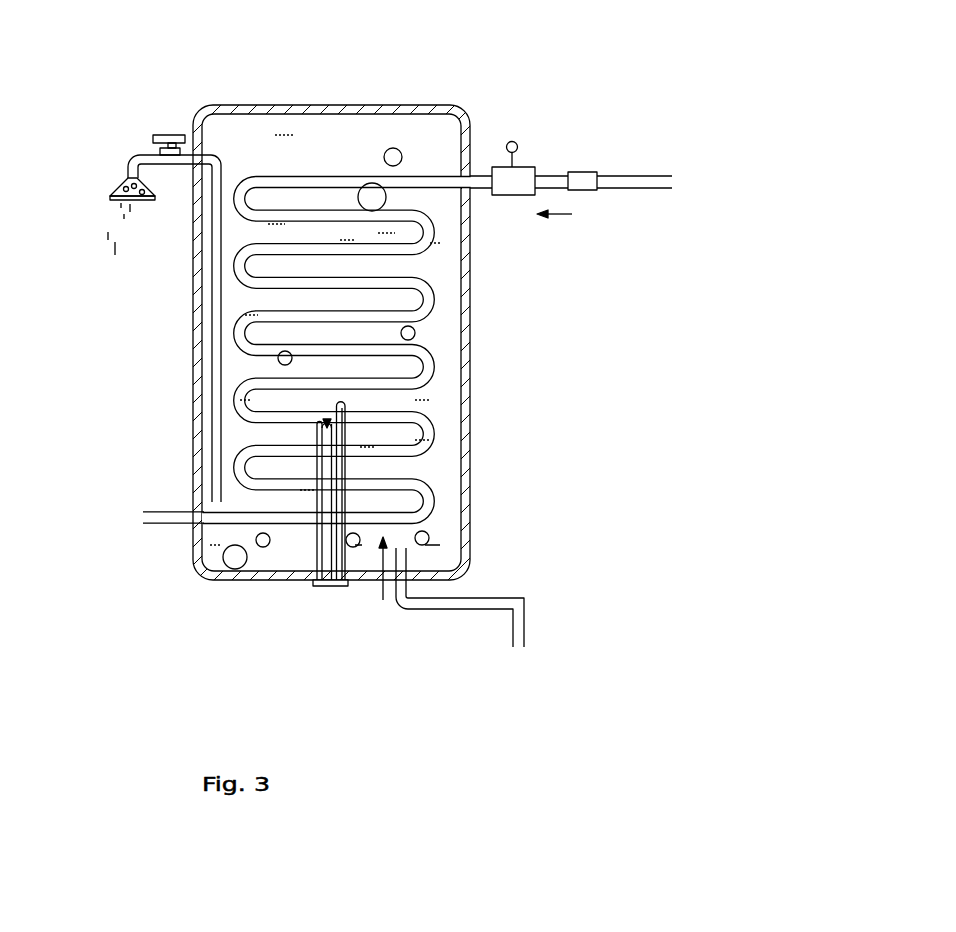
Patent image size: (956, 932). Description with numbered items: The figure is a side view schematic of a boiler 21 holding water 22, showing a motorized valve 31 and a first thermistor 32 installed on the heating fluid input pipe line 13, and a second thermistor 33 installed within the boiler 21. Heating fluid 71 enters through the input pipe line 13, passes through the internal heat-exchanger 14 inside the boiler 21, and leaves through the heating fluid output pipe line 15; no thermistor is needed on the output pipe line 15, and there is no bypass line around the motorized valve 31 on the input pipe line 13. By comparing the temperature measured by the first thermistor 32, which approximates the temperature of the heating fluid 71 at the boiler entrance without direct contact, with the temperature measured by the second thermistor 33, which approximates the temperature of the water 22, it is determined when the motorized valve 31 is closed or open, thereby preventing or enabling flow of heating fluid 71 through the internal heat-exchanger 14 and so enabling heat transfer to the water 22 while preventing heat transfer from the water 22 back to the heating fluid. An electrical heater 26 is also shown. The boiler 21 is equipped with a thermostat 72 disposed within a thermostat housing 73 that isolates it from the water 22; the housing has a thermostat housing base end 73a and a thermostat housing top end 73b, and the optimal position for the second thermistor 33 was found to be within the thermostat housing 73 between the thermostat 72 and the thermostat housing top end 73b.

The heating fluid input pipe line 13 is at (618, 182).
The internal heat-exchanger 14 is at (187, 500).
The heating fluid output pipe line 15 is at (147, 525).
The boiler 21 is at (375, 105).
The water 22 is at (234, 560).
The electrical heater 26 is at (345, 465).
The motorized valve 31 is at (518, 178).
The first thermistor 32 is at (583, 180).
The second thermistor 33 is at (329, 424).
The heating fluid 71 is at (275, 180).
The thermostat 72 is at (328, 550).
The thermostat housing 73 is at (317, 530).
The thermostat housing base end 73a is at (332, 586).
The thermostat housing top end 73b is at (324, 424).